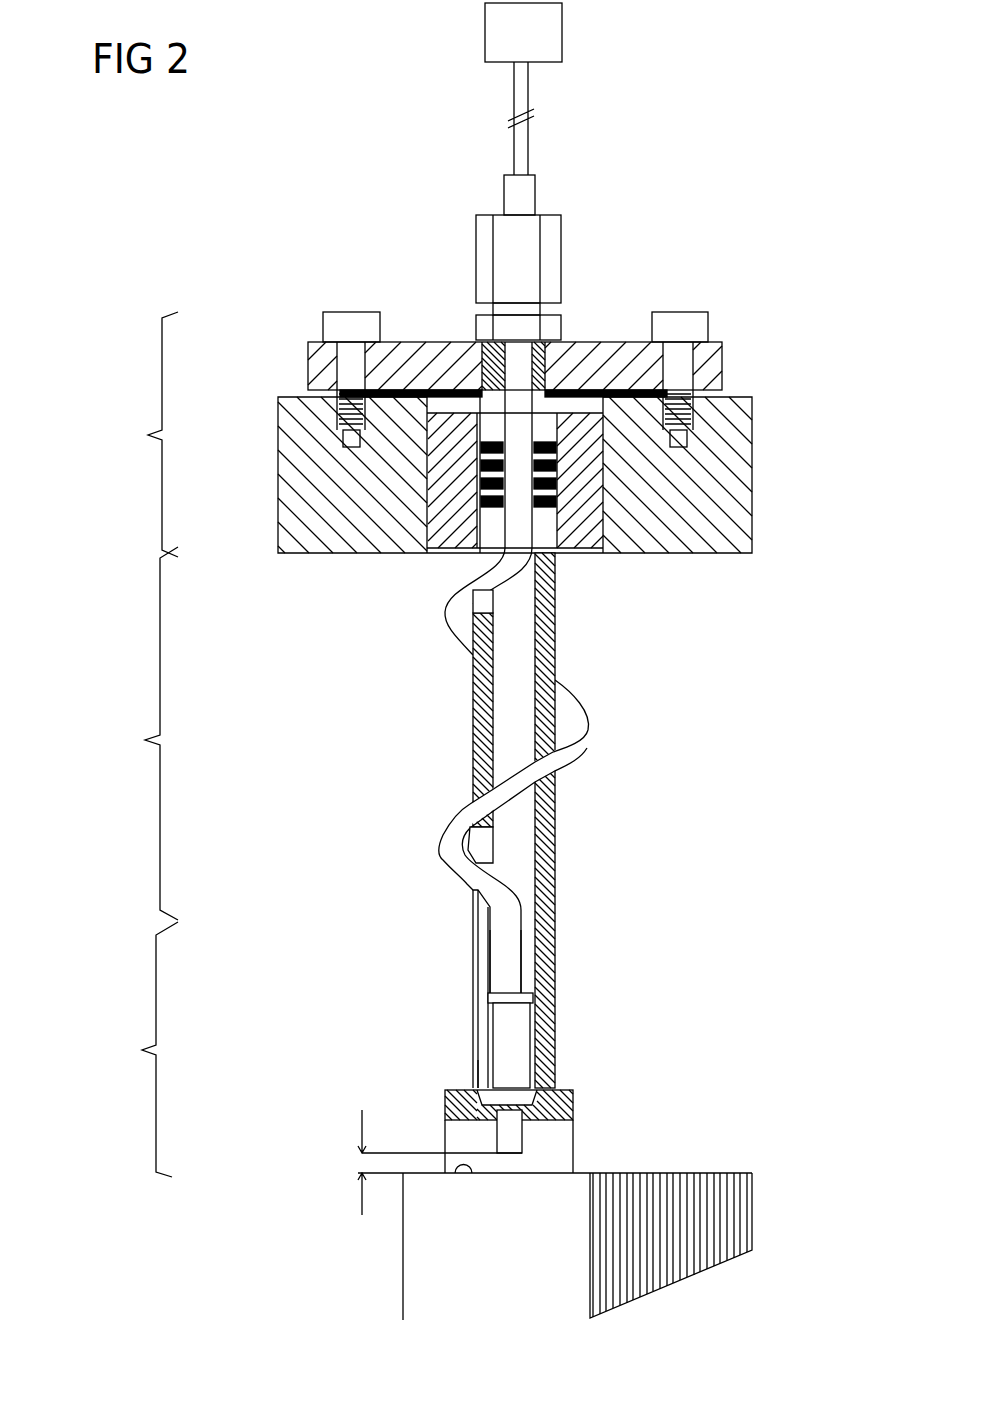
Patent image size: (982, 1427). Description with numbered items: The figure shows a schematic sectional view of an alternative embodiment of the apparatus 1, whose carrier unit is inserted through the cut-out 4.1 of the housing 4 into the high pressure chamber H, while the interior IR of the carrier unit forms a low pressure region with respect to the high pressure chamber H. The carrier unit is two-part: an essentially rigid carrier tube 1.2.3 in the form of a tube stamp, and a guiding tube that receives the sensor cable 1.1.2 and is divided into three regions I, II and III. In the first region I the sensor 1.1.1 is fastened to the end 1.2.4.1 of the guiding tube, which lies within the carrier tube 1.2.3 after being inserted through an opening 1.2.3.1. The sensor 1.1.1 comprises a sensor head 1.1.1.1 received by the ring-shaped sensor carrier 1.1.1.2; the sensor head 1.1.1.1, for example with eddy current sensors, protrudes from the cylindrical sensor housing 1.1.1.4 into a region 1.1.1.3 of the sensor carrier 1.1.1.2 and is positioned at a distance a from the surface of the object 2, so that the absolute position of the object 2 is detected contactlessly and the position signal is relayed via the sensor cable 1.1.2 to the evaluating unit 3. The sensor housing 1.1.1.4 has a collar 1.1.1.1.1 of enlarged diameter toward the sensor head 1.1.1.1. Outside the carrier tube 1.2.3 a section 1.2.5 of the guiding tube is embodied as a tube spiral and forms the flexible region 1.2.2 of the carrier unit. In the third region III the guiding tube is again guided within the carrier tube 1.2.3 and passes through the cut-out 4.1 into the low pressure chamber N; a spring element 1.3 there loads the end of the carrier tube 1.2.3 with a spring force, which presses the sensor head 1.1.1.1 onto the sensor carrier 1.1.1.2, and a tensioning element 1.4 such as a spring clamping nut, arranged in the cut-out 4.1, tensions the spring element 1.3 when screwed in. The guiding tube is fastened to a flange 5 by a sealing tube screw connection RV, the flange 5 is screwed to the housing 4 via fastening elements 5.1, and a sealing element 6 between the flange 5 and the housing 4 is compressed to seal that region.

The apparatus 1 is at (350, 213).
The object 2 is at (455, 1168).
The evaluating unit 3 is at (562, 32).
The housing 4 is at (280, 473).
The cut-out 4.1 is at (463, 405).
The flange 5 is at (312, 355).
The fastening elements 5.1 is at (352, 310).
The sealing element 6 is at (628, 385).
The sensor 1.1.1 is at (567, 1088).
The sensor head 1.1.1.1 is at (573, 1140).
The collar 1.1.1.1.1 is at (473, 1080).
The sensor carrier 1.1.1.2 is at (573, 1107).
The region of the sensor carrier 1.1.1.3 is at (563, 1165).
The sensor housing 1.1.1.4 is at (500, 1035).
The sensor cable 1.1.2 is at (530, 145).
The flexible region 1.2.2 is at (547, 642).
The carrier tube 1.2.3 is at (557, 900).
The opening 1.2.3.1 is at (480, 557).
The end of the guiding tube 1.2.4.1 is at (502, 967).
The section of the guiding tube 1.2.5 is at (547, 642).
The spring element 1.3 is at (600, 482).
The tensioning element 1.4 is at (572, 553).
The tube screw connection RV is at (550, 253).
The interior of the carrier unit IR is at (498, 714).
The low pressure chamber N is at (672, 212).
The high pressure chamber H is at (658, 830).
The distance a is at (431, 1162).
The first region I is at (151, 1049).
The second region II is at (145, 733).
The third region III is at (140, 434).